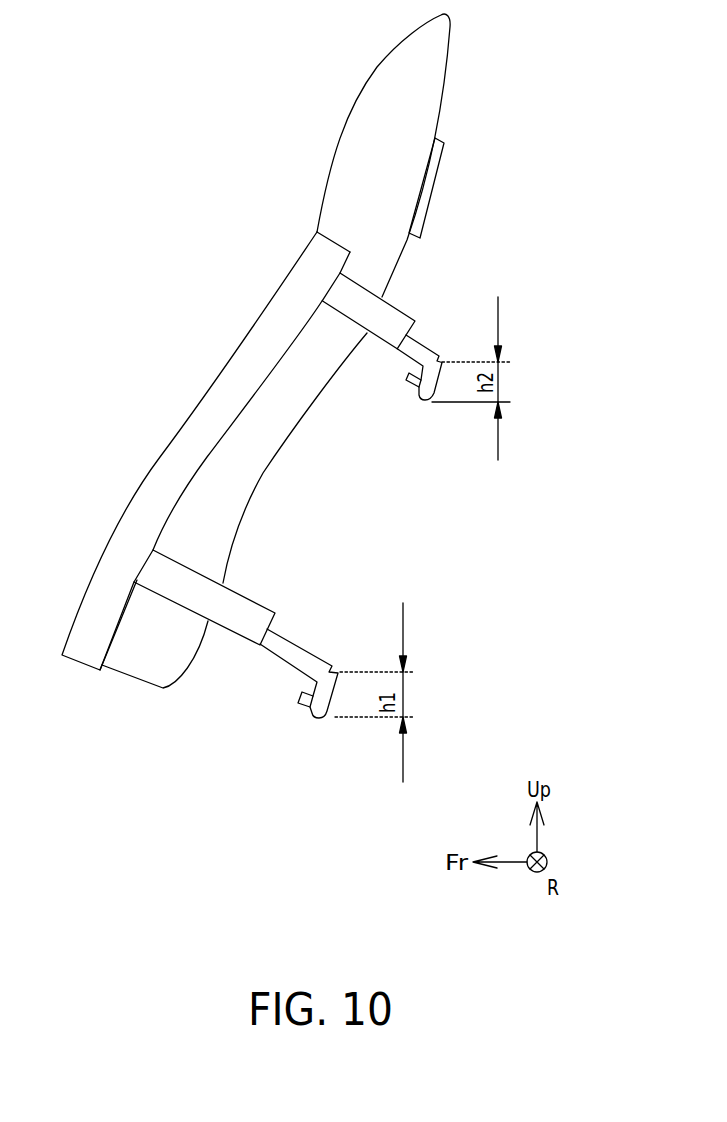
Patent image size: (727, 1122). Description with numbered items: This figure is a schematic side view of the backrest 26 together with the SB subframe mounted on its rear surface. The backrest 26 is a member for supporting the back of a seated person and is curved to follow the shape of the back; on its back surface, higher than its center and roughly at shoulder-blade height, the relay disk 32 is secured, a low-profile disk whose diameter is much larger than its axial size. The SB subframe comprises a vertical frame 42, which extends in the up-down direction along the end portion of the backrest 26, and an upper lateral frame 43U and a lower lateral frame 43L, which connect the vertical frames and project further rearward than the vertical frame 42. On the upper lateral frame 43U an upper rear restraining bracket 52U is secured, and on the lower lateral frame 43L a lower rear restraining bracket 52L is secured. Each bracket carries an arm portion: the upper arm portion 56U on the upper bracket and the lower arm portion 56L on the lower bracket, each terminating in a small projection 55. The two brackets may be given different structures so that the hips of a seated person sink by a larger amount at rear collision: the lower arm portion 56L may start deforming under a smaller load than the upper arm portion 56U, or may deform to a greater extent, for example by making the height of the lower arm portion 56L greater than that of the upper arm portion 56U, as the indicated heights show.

The backrest 26 is at (354, 103).
The relay disk 32 is at (438, 177).
The vertical frame 42 is at (203, 413).
The upper lateral frame 43U is at (405, 310).
The lower lateral frame 43L is at (253, 603).
The upper rear restraining bracket 52U is at (410, 361).
The lower rear restraining bracket 52L is at (277, 660).
The protrusion 55 is at (405, 387).
The upper arm portion 56U is at (428, 348).
The lower arm portion 56L is at (313, 662).